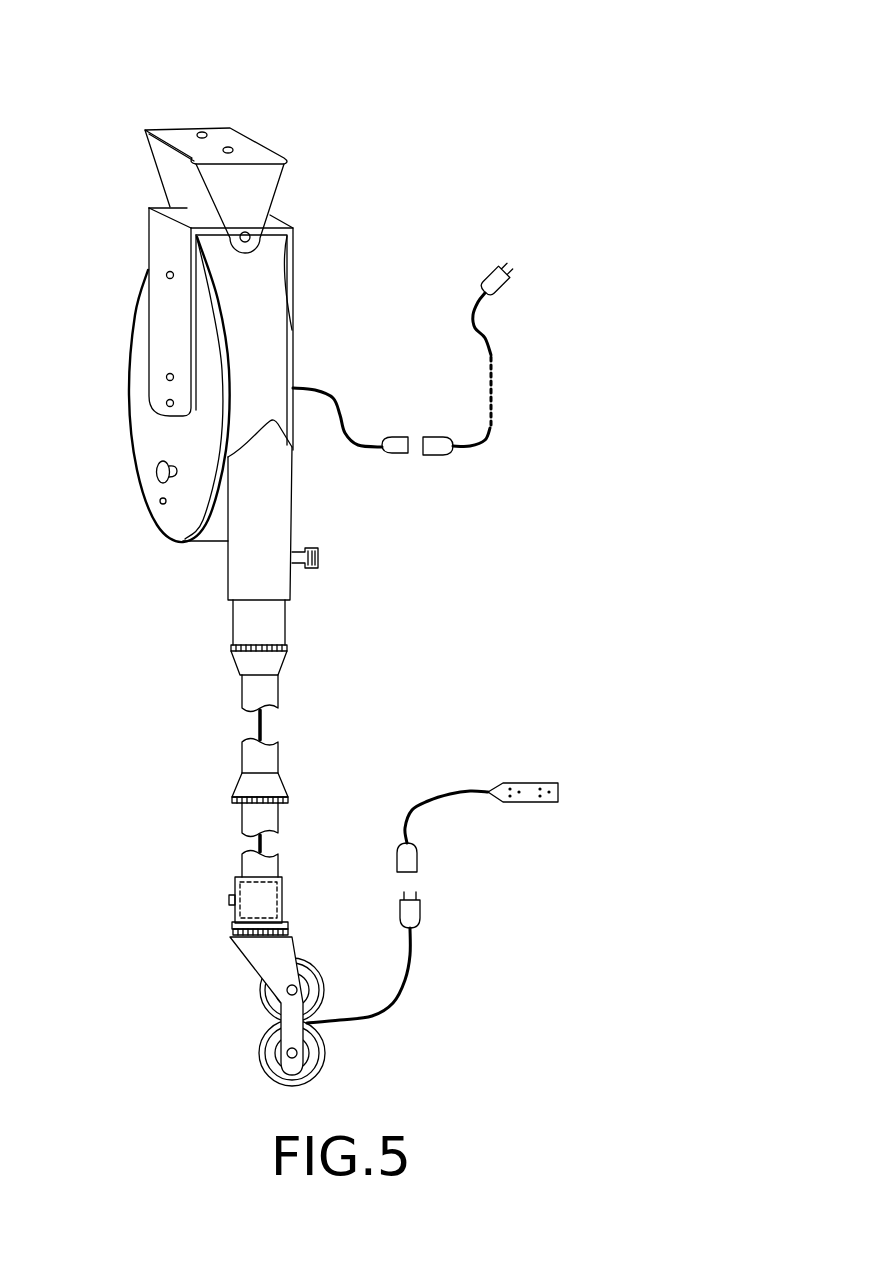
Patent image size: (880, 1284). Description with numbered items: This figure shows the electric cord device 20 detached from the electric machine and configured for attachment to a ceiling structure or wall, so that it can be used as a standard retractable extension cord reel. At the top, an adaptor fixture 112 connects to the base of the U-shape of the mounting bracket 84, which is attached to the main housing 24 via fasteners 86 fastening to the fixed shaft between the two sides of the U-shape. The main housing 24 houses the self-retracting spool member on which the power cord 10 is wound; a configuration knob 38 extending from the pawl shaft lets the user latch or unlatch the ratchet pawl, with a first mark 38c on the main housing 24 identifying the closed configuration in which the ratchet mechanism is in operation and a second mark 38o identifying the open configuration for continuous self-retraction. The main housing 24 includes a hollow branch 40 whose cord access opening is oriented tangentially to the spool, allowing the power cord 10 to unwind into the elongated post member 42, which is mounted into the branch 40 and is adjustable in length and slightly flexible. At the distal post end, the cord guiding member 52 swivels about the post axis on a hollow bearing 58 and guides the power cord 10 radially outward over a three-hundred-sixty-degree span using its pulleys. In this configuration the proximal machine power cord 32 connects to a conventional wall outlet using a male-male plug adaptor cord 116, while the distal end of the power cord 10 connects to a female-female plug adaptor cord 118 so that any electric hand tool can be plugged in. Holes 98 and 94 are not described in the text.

The device 20 is at (424, 112).
The adaptor fixture 112 is at (268, 188).
The mounting bracket 84 is at (296, 250).
The main housing 24 is at (137, 337).
The hole 98 is at (162, 277).
The hole 94 is at (162, 377).
The fasteners 86 is at (162, 403).
The first mark 38c is at (135, 463).
The configuration knob 38 is at (155, 477).
The second mark 38o is at (158, 505).
The hollow branch 40 is at (288, 500).
The elongated post member 42 is at (213, 776).
The hollow bearing 58 is at (217, 930).
The cord guiding member 52 is at (235, 1052).
The power cord 10 is at (262, 718).
The female-female plug adaptor cord 118 is at (452, 792).
The proximal machine power cord 32 is at (342, 403).
The male-male plug adaptor cord 116 is at (472, 323).